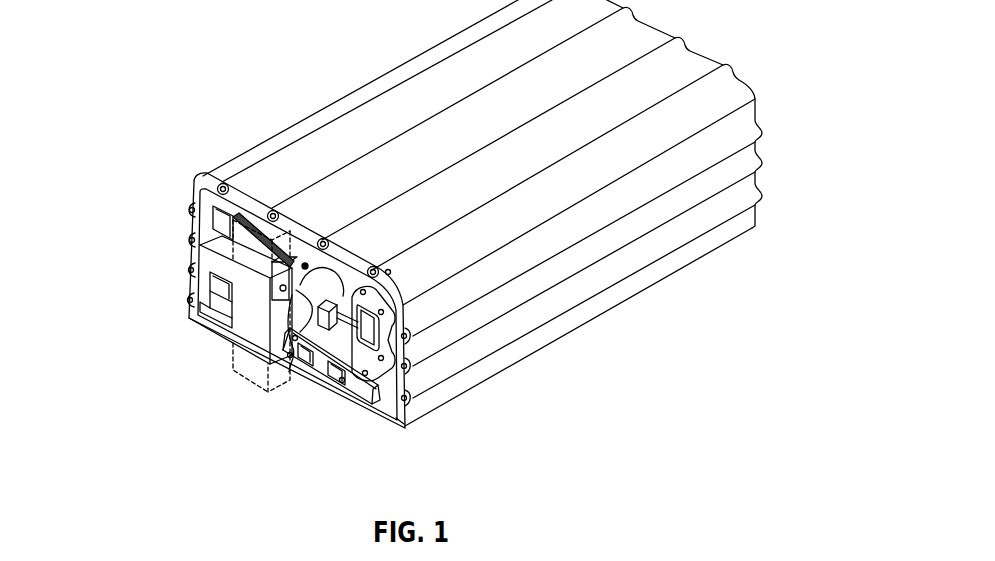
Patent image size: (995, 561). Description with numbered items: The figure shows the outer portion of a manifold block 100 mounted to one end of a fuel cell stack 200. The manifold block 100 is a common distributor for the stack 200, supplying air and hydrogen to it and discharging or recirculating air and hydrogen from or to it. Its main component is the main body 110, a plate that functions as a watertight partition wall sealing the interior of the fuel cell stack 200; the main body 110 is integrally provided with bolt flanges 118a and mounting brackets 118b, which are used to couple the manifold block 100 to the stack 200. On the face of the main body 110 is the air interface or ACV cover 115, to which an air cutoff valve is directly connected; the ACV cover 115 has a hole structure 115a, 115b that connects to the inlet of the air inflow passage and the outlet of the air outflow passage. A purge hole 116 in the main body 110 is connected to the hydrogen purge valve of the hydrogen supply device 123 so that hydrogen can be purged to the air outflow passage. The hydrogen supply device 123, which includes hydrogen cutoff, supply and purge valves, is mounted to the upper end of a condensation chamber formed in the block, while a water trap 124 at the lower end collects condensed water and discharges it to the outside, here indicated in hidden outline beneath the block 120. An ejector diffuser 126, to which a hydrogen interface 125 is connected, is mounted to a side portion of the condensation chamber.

The manifold block 100 is at (167, 257).
The fuel cell stack 200 is at (362, 86).
The main body 110 is at (197, 193).
The air interface (ACV cover) 115 is at (323, 368).
The hole of ACV cover 115a is at (318, 377).
The hole of ACV cover 115b is at (338, 381).
The purge hole 116 is at (305, 262).
The bolt flanges 118a is at (386, 263).
The mounting brackets 118b is at (398, 432).
The terminal block 120 is at (235, 328).
The hydrogen supply device (FPS assembly) 123 is at (245, 208).
The water trap 124 is at (243, 382).
The hydrogen interface 125 is at (388, 348).
The ejector diffuser 126 is at (324, 300).